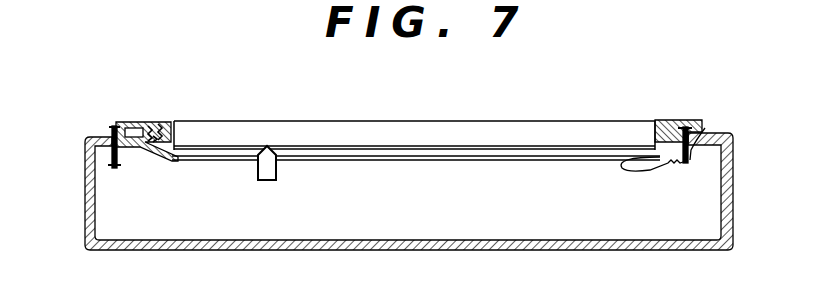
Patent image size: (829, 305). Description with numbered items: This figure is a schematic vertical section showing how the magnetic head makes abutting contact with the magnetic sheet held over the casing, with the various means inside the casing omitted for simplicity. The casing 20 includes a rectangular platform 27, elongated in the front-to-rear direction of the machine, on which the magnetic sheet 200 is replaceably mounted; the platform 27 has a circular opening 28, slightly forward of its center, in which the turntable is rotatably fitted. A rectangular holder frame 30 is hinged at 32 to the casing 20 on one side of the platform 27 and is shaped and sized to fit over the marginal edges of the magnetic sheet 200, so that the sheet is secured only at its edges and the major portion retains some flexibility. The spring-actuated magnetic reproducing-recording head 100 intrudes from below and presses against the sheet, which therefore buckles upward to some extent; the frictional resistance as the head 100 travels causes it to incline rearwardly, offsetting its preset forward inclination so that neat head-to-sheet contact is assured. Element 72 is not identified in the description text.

The casing 20 is at (85, 213).
The hinge 32 is at (103, 138).
The holder frame 30 is at (156, 122).
The spring contact 72 is at (177, 126).
The magnetic sheet 200 is at (522, 146).
The platform 27 is at (182, 160).
The magnetic reproducing-recording head 100 is at (267, 178).
The circular opening 28 is at (705, 128).